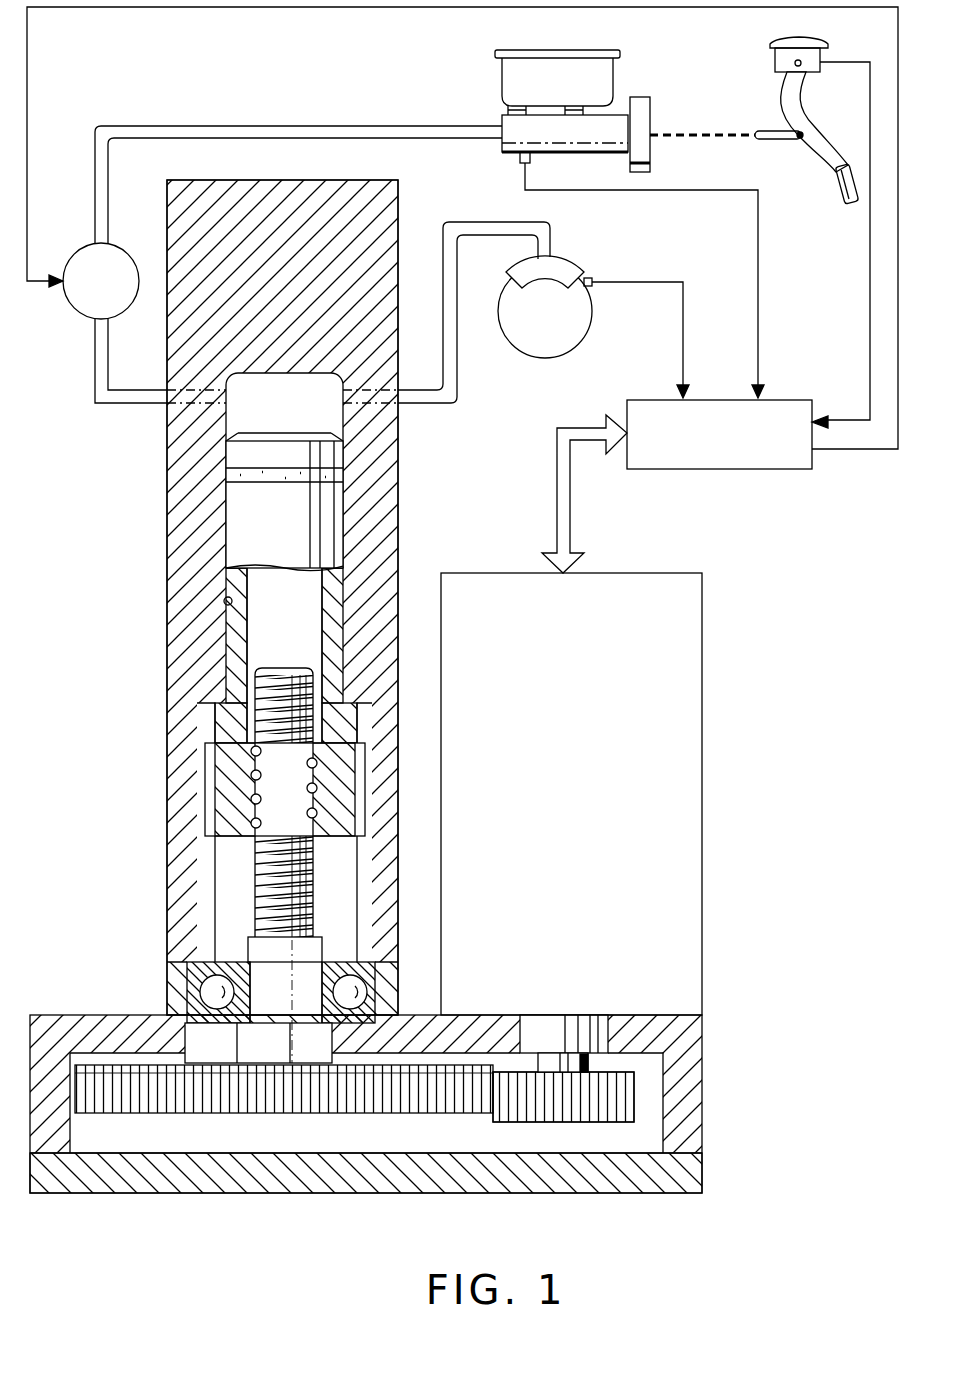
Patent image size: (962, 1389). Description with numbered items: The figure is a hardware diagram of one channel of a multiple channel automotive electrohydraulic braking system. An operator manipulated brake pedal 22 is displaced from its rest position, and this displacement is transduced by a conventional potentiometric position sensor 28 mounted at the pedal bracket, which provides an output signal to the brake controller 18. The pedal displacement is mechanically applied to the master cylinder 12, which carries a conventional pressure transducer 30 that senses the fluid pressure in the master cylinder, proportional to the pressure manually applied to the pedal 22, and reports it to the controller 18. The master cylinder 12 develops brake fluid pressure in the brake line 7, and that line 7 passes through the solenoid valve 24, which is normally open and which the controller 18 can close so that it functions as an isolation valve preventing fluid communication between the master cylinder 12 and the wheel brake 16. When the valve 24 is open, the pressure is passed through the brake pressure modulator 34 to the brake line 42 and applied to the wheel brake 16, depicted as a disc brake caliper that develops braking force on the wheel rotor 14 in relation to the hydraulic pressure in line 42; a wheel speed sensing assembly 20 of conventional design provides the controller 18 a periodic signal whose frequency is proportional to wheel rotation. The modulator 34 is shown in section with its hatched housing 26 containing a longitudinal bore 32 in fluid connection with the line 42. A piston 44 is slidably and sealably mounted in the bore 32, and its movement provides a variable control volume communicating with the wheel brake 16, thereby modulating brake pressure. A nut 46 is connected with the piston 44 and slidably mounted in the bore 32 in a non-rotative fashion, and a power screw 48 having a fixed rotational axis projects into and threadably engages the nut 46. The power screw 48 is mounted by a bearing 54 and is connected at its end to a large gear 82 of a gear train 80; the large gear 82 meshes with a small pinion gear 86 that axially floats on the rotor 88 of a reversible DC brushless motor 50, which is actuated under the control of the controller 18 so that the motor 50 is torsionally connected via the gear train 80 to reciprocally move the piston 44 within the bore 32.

The brake line 7 is at (424, 118).
The master cylinder 12 is at (598, 80).
The wheel rotor 14 is at (532, 345).
The wheel brake 16 is at (560, 270).
The brake controller 18 is at (738, 455).
The wheel speed sensing assembly 20 is at (595, 280).
The brake pedal 22 is at (817, 173).
The solenoid valve 24 is at (80, 318).
The cylinder housing 26 is at (293, 192).
The potentiometric position sensor 28 is at (775, 57).
The pressure transducer 30 is at (520, 158).
The longitudinal bore 32 is at (225, 612).
The brake pressure modulator 34 is at (156, 583).
The brake line 42 is at (422, 392).
The piston 44 is at (243, 505).
The nut 46 is at (228, 778).
The power screw 48 is at (262, 862).
The reversible DC brushless motor 50 is at (668, 865).
The bearing 54 is at (200, 969).
The gear train 80 is at (223, 1141).
The large gear 82 is at (278, 1097).
The pinion gear 86 is at (568, 1107).
The rotor 88 is at (548, 1058).